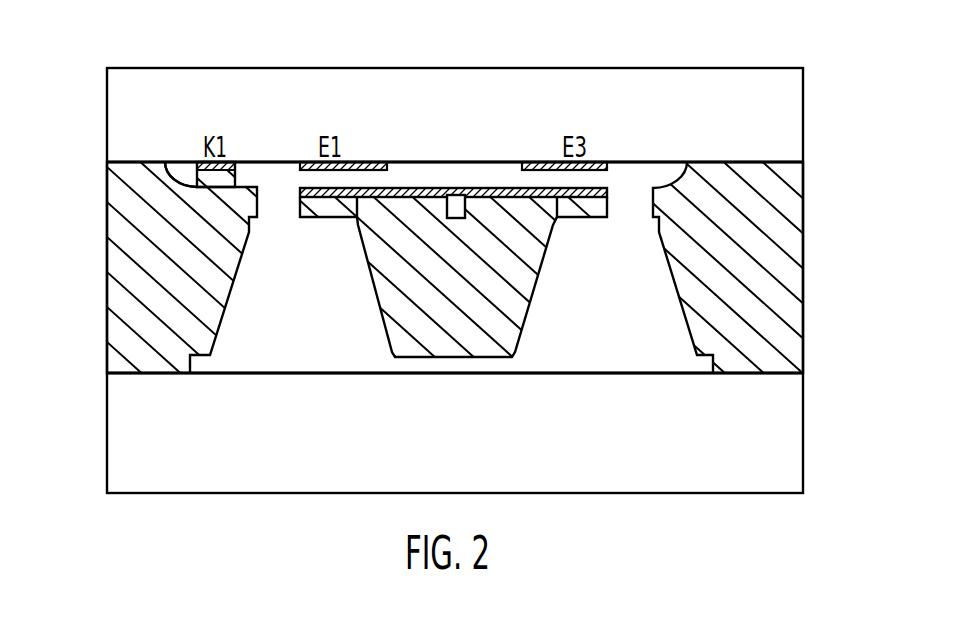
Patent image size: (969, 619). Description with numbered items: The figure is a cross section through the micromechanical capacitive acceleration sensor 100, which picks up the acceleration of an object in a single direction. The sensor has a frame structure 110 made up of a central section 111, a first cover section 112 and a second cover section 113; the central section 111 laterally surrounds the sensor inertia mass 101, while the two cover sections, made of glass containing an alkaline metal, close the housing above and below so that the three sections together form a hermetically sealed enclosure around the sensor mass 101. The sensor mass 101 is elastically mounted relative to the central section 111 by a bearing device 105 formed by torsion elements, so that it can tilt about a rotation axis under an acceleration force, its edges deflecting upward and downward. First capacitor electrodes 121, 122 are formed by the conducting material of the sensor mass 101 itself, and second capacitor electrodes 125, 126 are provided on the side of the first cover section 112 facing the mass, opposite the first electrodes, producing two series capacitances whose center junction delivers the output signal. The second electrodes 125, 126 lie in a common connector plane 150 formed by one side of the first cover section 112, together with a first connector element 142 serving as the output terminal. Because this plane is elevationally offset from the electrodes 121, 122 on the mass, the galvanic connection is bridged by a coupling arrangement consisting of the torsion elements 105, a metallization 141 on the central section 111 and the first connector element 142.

The micromechanical capacitive acceleration sensor 100 is at (60, 367).
The frame structure 110 is at (830, 212).
The central section 111 is at (137, 243).
The first cover section 112 is at (782, 117).
The second cover section 113 is at (763, 438).
The sensor inertia mass 101 is at (398, 305).
The bearing device 105 is at (466, 208).
The first capacitor electrode 121 is at (300, 188).
The first capacitor electrode 122 is at (607, 190).
The second capacitor electrode 125 is at (375, 162).
The second capacitor electrode 126 is at (548, 162).
The metallization 141 is at (172, 162).
The first connector element 142 is at (197, 163).
The common connector plane 150 is at (455, 162).